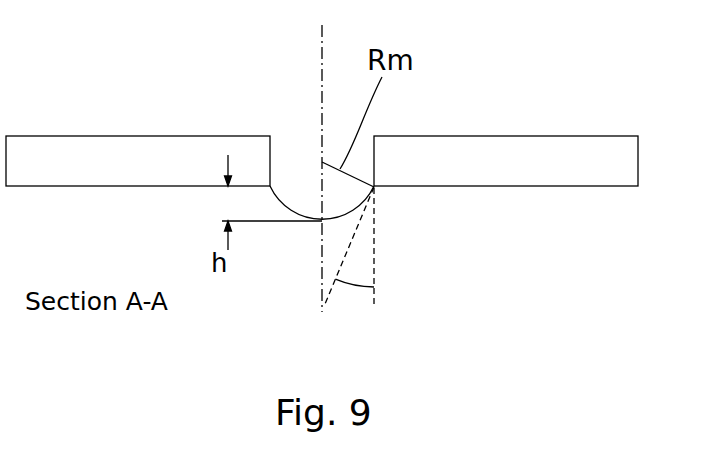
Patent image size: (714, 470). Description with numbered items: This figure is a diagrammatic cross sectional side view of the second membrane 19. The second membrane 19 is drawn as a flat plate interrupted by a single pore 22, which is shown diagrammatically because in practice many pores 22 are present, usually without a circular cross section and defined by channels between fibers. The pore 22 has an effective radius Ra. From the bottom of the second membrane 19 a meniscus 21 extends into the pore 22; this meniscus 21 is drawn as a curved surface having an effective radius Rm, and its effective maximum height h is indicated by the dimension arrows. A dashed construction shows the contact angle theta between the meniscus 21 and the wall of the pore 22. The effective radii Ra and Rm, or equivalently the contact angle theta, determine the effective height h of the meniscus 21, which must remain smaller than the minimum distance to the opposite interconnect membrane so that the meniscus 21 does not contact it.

The second membrane 19 is at (533, 167).
The meniscus 21 is at (345, 214).
The pore 22 is at (292, 160).